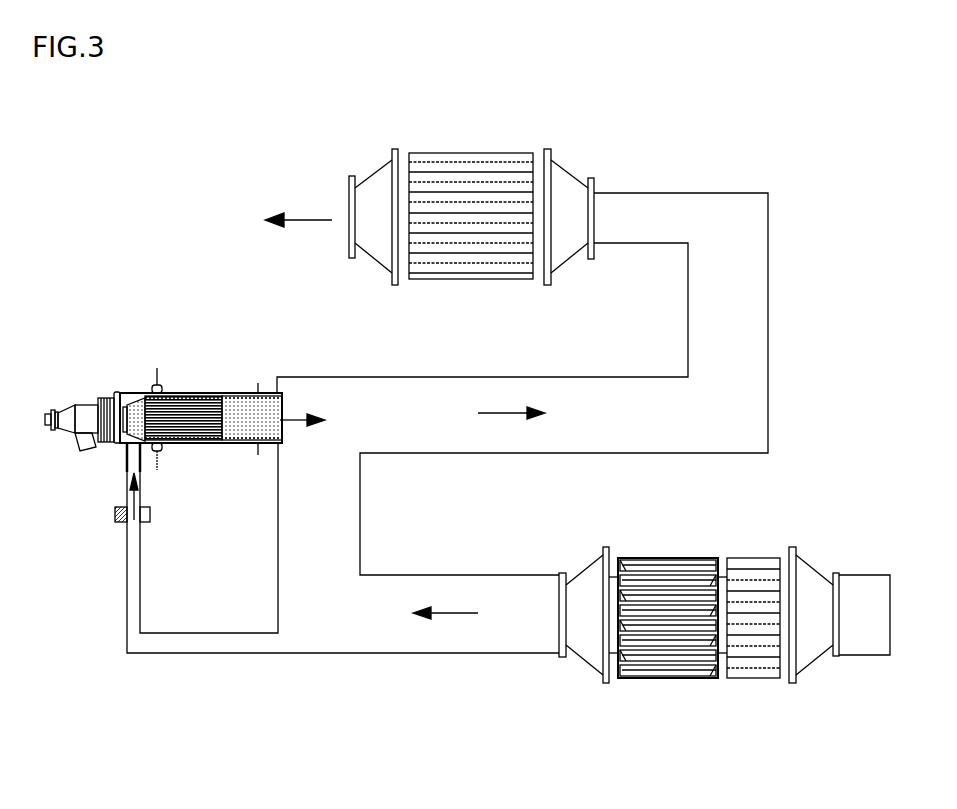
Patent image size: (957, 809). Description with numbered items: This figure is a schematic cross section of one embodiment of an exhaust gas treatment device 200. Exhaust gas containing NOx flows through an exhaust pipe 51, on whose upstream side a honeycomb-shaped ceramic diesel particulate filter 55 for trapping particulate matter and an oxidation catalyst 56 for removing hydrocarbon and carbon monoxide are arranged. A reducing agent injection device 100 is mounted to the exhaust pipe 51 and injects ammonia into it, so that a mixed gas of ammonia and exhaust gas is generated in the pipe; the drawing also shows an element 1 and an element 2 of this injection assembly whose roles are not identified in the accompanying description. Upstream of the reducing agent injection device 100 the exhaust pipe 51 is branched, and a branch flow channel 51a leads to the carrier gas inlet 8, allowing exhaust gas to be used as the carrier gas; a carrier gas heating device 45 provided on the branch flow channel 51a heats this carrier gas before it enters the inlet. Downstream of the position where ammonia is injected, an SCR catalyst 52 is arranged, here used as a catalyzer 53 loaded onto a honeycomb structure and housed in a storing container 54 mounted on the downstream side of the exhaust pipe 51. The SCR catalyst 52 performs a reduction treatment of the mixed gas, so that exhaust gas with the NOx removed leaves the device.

The reactor body 1 is at (167, 392).
The nozzle / burner 2 is at (90, 420).
The carrier gas inlet 8 is at (128, 460).
The carrier gas heating device 45 is at (115, 518).
The exhaust pipe 51 is at (353, 390).
The branch flow channel 51a is at (138, 583).
The SCR catalyst 52 is at (473, 152).
The catalyzer 53 is at (438, 173).
The storing container 54 is at (565, 255).
The diesel particulate filter 55 is at (670, 643).
The oxidation catalyst 56 is at (748, 648).
The reducing agent injection device 100 is at (108, 383).
The exhaust gas treatment device 200 is at (797, 121).